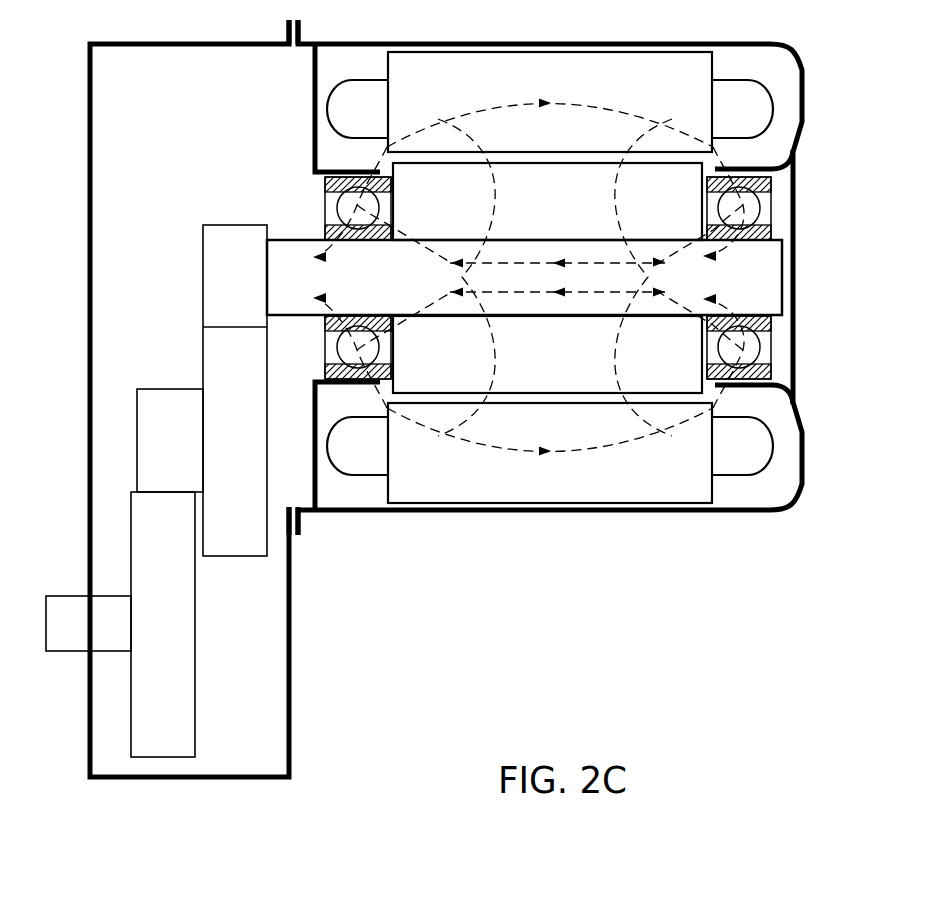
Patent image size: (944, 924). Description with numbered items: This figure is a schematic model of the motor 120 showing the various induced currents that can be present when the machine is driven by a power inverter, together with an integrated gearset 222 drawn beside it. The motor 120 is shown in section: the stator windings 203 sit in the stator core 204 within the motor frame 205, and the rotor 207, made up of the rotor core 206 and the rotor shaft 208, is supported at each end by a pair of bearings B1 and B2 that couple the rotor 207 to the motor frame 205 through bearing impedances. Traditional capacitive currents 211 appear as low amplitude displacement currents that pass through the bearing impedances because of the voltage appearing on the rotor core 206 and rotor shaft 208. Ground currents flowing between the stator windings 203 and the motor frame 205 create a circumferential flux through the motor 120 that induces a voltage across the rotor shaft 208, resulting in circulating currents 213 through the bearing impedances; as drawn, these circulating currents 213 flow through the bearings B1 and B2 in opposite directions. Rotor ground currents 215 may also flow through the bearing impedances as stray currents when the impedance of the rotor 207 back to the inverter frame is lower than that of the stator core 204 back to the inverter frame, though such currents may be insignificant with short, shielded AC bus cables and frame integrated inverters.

The motor 120 is at (278, 104).
The stator windings 203 is at (374, 80).
The stator core 204 is at (559, 85).
The motor frame 205 is at (299, 33).
The rotor core 206 is at (562, 210).
The rotor 207 is at (260, 208).
The rotor shaft 208 is at (421, 282).
The capacitive currents 211 is at (488, 230).
The circulating currents 213 is at (575, 103).
The rotor ground currents 215 is at (322, 298).
The integrated gearset 222 is at (158, 272).
The first bearing B1 is at (745, 234).
The second bearing B2 is at (325, 379).